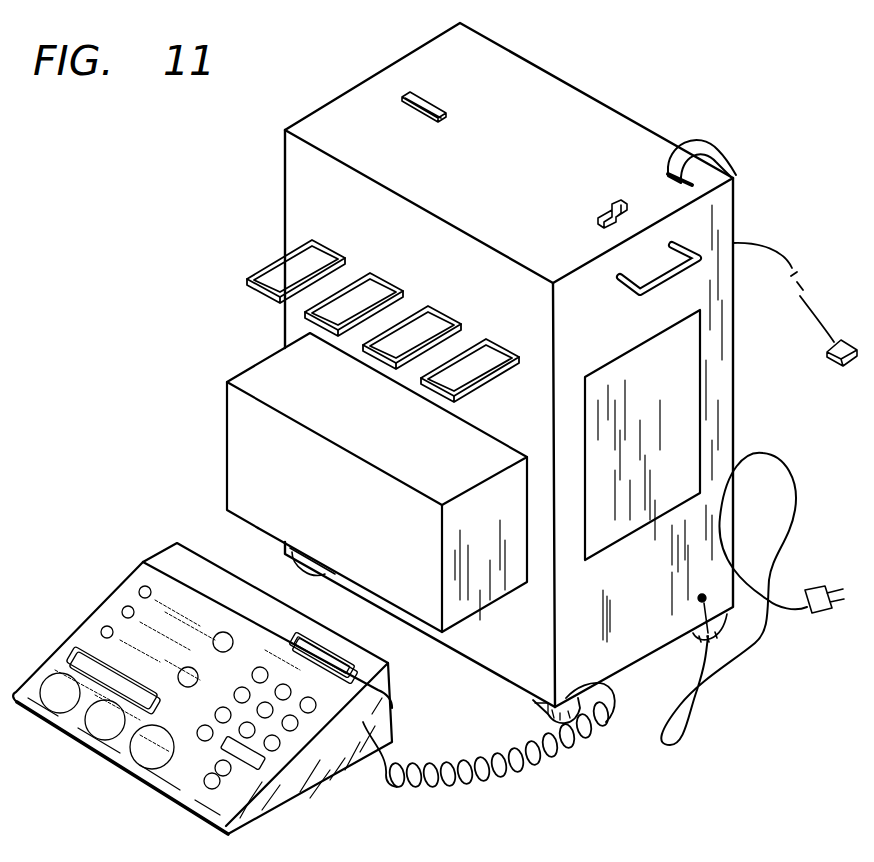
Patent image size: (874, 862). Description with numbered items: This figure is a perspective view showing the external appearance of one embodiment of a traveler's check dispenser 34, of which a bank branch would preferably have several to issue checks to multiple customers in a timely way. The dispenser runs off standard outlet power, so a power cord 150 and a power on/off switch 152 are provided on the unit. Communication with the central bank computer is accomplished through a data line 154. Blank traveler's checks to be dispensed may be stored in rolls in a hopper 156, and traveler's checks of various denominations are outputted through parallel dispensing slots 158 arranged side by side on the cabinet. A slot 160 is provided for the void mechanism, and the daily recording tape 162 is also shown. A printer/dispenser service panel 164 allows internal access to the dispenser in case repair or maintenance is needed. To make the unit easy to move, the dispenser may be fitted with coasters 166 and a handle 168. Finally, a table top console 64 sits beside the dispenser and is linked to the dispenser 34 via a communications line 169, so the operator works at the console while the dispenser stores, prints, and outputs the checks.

The traveler's check dispenser 34 is at (608, 106).
The table top console 64 is at (310, 786).
The power cord 150 is at (772, 620).
The power on/off switch 152 is at (606, 214).
The data line 154 is at (790, 265).
The hopper 156 is at (236, 452).
The parallel dispensing slots 158 is at (387, 313).
The slot 160 is at (407, 95).
The daily recording tape 162 is at (702, 142).
The printer/dispenser service panel 164 is at (692, 460).
The coasters 166 is at (544, 714).
The handle 168 is at (707, 237).
The communications line 169 is at (566, 757).